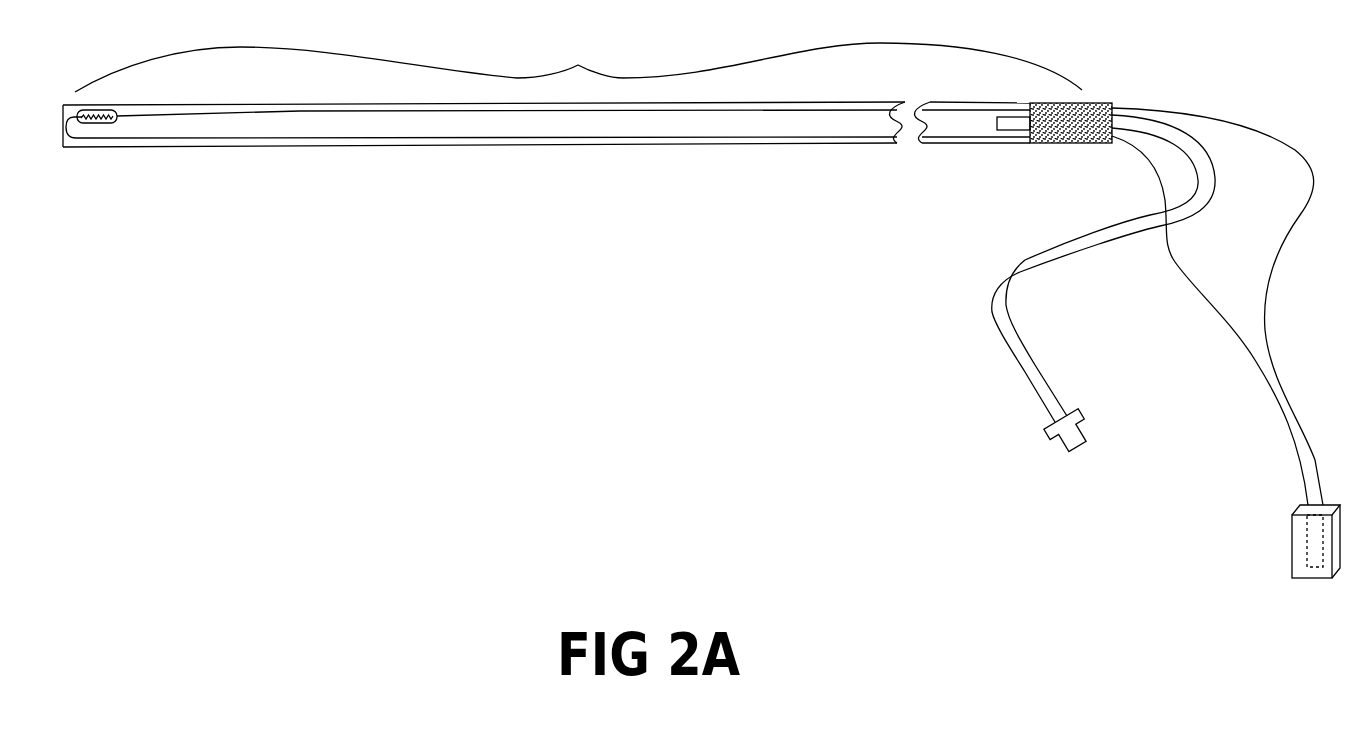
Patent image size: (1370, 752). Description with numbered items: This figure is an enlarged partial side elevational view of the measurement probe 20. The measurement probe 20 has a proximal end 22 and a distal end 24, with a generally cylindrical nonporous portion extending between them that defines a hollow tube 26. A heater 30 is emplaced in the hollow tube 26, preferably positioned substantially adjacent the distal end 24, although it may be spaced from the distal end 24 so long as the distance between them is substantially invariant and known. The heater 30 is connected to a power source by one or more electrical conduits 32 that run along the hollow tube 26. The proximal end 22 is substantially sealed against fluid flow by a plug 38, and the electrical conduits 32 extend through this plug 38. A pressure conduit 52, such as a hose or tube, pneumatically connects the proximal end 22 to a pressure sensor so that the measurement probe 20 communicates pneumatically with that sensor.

The measurement probe 20 is at (214, 355).
The proximal end 22 is at (1076, 152).
The distal end 24 is at (77, 153).
The hollow tube 26 is at (578, 67).
The heater 30 is at (83, 108).
The electrical conduits 32 is at (274, 115).
The plug 38 is at (1097, 108).
The pressure conduit 52 is at (1017, 366).